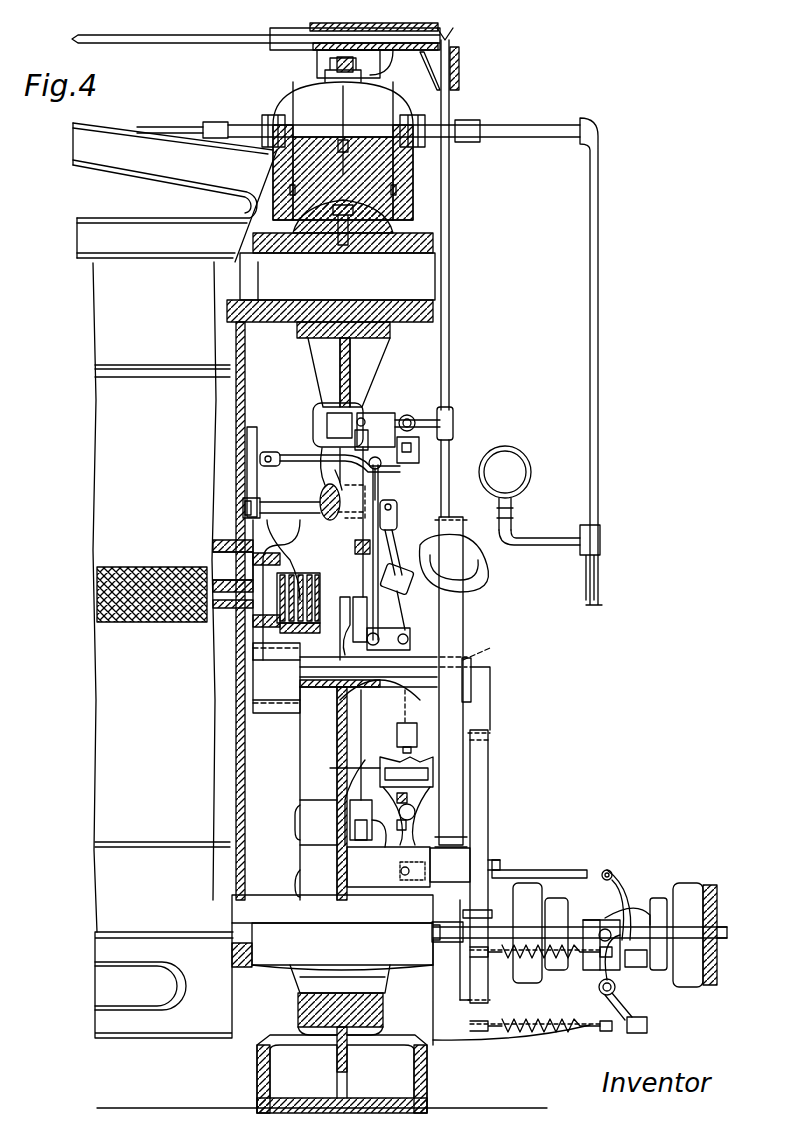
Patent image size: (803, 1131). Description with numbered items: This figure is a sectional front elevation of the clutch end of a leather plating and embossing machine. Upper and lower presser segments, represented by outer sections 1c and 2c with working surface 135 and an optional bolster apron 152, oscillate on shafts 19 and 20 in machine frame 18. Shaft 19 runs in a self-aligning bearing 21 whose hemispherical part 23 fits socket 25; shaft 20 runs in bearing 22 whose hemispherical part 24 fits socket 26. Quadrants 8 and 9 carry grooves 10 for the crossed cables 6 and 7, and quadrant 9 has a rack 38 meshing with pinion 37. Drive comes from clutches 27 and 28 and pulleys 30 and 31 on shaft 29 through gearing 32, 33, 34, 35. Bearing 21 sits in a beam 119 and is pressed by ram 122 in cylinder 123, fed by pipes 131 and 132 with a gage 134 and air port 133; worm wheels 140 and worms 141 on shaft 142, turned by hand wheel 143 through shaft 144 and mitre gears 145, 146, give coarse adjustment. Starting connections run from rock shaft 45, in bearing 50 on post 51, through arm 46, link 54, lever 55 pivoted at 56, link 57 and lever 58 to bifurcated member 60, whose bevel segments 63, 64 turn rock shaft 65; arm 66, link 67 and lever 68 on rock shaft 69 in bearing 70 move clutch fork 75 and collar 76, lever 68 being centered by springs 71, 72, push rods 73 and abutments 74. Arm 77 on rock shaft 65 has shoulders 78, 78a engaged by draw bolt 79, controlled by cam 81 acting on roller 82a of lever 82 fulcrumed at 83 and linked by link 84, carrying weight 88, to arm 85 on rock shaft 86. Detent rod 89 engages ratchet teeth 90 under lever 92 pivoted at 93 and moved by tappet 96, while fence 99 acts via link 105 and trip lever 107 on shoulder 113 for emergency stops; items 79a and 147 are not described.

The shaft 142 is at (148, 45).
The worm wheels 140 is at (282, 45).
The worms 141 is at (320, 50).
The mitre gear 146 is at (452, 31).
The mitre gear 145 is at (462, 57).
The cylinder 123 is at (300, 105).
The port 133 is at (362, 102).
The pipe 132 is at (168, 127).
The ram 122 is at (300, 160).
The socket 25 is at (398, 180).
The hemispherical part 23 is at (380, 222).
The bearing 21 is at (400, 275).
The shaft 19 is at (250, 277).
The upper presser segment section 1c is at (248, 380).
The lower presser segment section 2c is at (248, 814).
The beam 119 is at (374, 362).
The shaft 144 is at (450, 364).
The pipe line 131 is at (598, 312).
The pressure gage 134 is at (520, 470).
The cam 81 is at (254, 430).
The bearing 50 is at (318, 412).
The post 51 is at (344, 450).
The arm 46 is at (382, 413).
The rock shaft 45 is at (410, 415).
The tappet 96 is at (266, 454).
The pivot 93 is at (338, 456).
The ratchet teeth 90 is at (445, 456).
The slide rod 89 is at (412, 457).
The roller 82a is at (243, 508).
The lever 82 is at (286, 502).
The fulcrum 83 is at (322, 502).
The link 54 is at (339, 471).
The shoulder 113 is at (354, 501).
The lever 92 is at (378, 478).
The trip lever 107 is at (380, 489).
The link 84 is at (399, 540).
The weight 88 is at (451, 682).
The hand wheel 143 is at (480, 570).
The fence 99 is at (140, 570).
The pipe 147 is at (230, 570).
The quadrant 8 is at (288, 560).
The link 105 is at (358, 548).
The cables 6 is at (280, 582).
The peripheral circular grooves 10 is at (314, 578).
The pivot 56 is at (344, 622).
The lever 55 is at (364, 614).
The arm 85 is at (404, 620).
The cables 7 is at (310, 613).
The quadrant 9 is at (312, 628).
The rock shaft 86 is at (383, 663).
The line 79a is at (489, 649).
The gear 35 is at (456, 692).
The rack 38 is at (273, 656).
The pinion 37 is at (266, 706).
The machine frame 18 is at (300, 722).
The link 57 is at (336, 740).
The draw bolt 79 is at (412, 725).
The shoulder 78 is at (420, 759).
The shoulder 78a is at (342, 766).
The arm 77 is at (424, 777).
The bevel segment 63 is at (408, 797).
The rock shaft 65 is at (415, 811).
The bevel segment 64 is at (408, 825).
The gear 33 is at (481, 788).
The gear 34 is at (456, 860).
The lever 58 is at (361, 842).
The bifurcated member 60 is at (403, 842).
The link 67 is at (506, 870).
The pulley 30 is at (530, 890).
The clutch 27 is at (564, 892).
The lever 68 is at (614, 874).
The clutch 28 is at (660, 898).
The pulley 31 is at (693, 896).
The shaft 20 is at (244, 908).
The arm 66 is at (393, 882).
The gear 32 is at (462, 950).
The shaft 29 is at (446, 941).
The collar 76 is at (606, 920).
The clutch fork 75 is at (600, 932).
The bearing 22 is at (270, 956).
The hemispherical part 24 is at (376, 976).
The socket 26 is at (298, 1010).
The spring 71 is at (520, 962).
The spring 72 is at (538, 976).
The push rod 73 is at (594, 964).
The rock shaft 69 is at (598, 991).
The adjustable abutment 74 is at (636, 1049).
The bearing 70 is at (518, 1040).
The working surface 135 is at (161, 597).
The bolster apron 152 is at (162, 783).